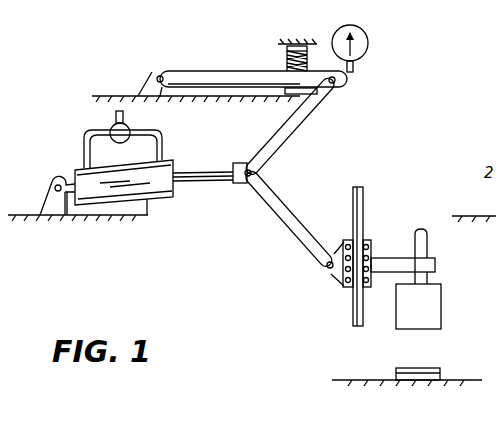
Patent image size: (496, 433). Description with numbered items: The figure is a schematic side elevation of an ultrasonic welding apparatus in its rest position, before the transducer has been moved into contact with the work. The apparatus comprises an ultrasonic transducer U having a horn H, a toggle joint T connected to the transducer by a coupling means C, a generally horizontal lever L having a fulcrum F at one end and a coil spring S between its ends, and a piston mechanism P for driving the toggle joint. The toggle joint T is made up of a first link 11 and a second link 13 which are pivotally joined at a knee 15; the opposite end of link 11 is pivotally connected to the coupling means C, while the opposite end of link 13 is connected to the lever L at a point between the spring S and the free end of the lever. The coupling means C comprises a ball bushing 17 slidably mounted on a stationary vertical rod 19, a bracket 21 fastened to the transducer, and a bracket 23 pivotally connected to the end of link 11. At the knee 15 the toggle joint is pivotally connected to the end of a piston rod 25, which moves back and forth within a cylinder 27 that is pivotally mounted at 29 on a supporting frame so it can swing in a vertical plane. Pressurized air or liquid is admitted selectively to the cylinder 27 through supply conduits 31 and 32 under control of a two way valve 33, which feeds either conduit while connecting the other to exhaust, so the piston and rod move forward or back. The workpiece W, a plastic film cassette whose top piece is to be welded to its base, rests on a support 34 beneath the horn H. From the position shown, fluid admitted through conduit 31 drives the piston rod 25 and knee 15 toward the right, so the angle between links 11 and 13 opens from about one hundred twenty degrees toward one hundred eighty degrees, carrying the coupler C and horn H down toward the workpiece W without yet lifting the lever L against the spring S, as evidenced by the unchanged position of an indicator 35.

The lever L is at (202, 70).
The fulcrum F is at (153, 68).
The coil spring S is at (294, 43).
The indicator 35 is at (363, 31).
The second link 13 is at (311, 115).
The first link 11 is at (292, 210).
The knee 15 is at (262, 168).
The toggle joint T is at (246, 187).
The piston rod 25 is at (217, 170).
The piston mechanism P is at (186, 190).
The cylinder 27 is at (147, 215).
The pivotal mounting 29 is at (50, 186).
The supply conduit 31 is at (84, 150).
The supply conduit 32 is at (162, 145).
The two way valve 33 is at (110, 127).
The stationary vertical rod 19 is at (363, 193).
The ball bushing 17 is at (369, 250).
The coupling means C is at (342, 294).
The bracket 23 is at (331, 275).
The bracket 21 is at (388, 273).
The ultrasonic transducer U is at (430, 244).
The horn H is at (444, 298).
The support 34 is at (361, 379).
The workpiece W is at (444, 378).